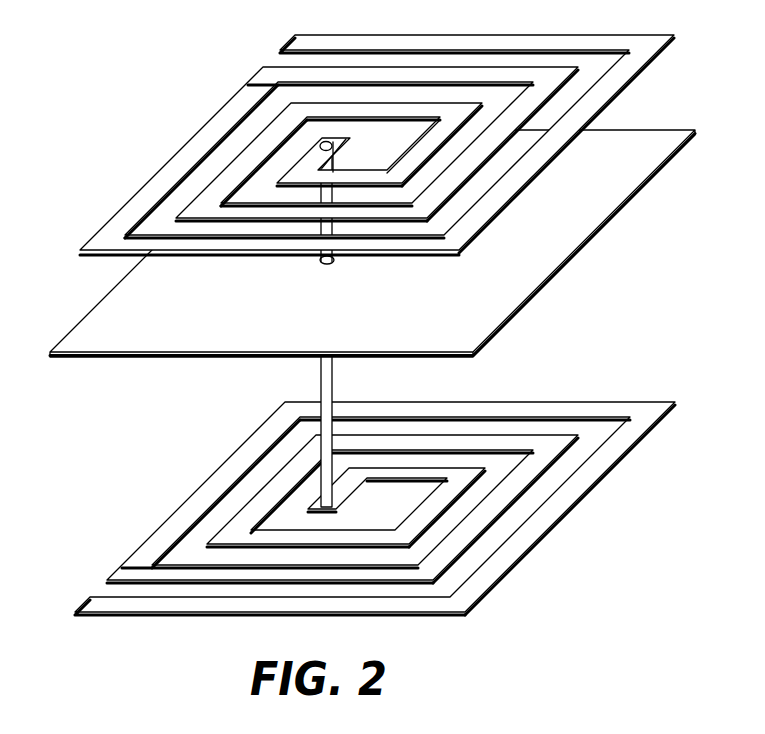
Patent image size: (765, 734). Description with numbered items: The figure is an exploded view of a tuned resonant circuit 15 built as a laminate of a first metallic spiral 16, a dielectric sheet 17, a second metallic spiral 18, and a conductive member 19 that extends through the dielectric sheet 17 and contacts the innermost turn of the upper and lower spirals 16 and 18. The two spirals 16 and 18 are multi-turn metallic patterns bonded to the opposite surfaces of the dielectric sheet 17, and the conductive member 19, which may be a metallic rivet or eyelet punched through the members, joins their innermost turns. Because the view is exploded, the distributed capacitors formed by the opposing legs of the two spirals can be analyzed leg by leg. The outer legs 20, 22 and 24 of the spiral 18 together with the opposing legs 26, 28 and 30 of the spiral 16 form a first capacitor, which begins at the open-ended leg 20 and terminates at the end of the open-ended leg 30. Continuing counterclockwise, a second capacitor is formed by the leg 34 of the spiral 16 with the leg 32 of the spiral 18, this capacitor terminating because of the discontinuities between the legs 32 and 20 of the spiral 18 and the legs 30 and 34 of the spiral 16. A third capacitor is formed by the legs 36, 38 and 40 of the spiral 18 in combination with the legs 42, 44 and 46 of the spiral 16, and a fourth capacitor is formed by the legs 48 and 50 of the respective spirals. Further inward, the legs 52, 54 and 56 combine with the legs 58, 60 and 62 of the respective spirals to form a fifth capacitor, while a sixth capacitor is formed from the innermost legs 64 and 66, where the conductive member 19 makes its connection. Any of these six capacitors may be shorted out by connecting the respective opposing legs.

The tuned resonant circuit 15 is at (153, 138).
The first metallic spiral 16 is at (217, 104).
The dielectric sheet 17 is at (97, 311).
The second metallic spiral 18 is at (186, 496).
The conductive member 19 is at (322, 377).
The open-ended leg 20 is at (213, 608).
The outer leg 22 is at (552, 520).
The outer leg 24 is at (575, 403).
The opposing leg 26 is at (230, 247).
The opposing leg 28 is at (540, 172).
The open-ended leg 30 is at (589, 44).
The leg 32 is at (160, 537).
The leg 34 is at (207, 133).
The leg 36 is at (263, 577).
The leg 38 is at (500, 510).
The leg 40 is at (523, 438).
The leg 42 is at (282, 213).
The leg 44 is at (464, 178).
The leg 46 is at (528, 75).
The leg 48 is at (265, 497).
The leg 50 is at (207, 192).
The leg 52 is at (340, 540).
The leg 54 is at (440, 518).
The leg 56 is at (401, 476).
The leg 58 is at (369, 180).
The leg 60 is at (452, 192).
The leg 62 is at (386, 107).
The leg 64 is at (350, 492).
The leg 66 is at (338, 152).